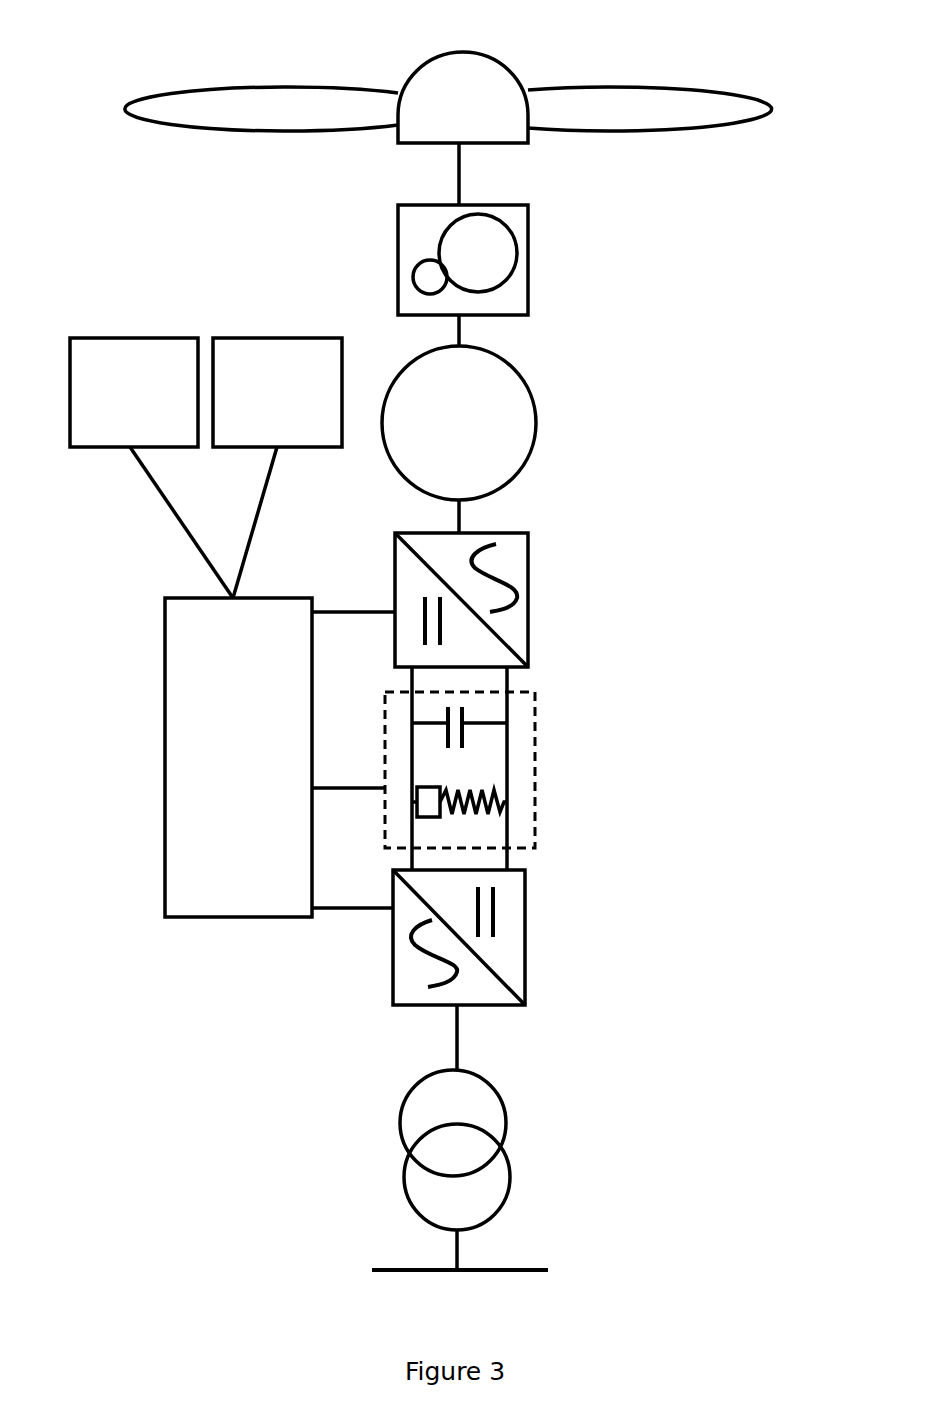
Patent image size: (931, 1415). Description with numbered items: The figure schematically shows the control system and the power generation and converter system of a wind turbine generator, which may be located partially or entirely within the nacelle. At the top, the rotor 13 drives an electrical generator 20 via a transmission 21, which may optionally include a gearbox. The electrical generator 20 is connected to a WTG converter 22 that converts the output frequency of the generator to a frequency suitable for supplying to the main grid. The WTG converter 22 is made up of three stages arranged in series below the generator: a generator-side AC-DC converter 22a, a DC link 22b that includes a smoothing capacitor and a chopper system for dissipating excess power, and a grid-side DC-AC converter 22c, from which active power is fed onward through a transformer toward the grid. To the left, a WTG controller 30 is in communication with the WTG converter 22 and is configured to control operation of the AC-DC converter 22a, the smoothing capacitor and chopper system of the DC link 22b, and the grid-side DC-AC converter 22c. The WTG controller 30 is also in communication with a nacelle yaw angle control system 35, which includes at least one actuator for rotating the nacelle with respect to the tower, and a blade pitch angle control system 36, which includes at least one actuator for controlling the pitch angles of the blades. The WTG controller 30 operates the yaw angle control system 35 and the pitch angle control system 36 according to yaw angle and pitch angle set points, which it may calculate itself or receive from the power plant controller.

The rotor 13 is at (512, 77).
The transmission 21 is at (530, 258).
The electrical generator 20 is at (540, 425).
The WTG converter 22 is at (592, 769).
The generator-side AC-DC converter 22a is at (528, 600).
The DC link 22b is at (537, 757).
The grid-side DC-AC converter 22c is at (527, 935).
The WTG controller 30 is at (222, 917).
The nacelle yaw angle control system 35 is at (134, 392).
The blade pitch angle control system 36 is at (277, 392).